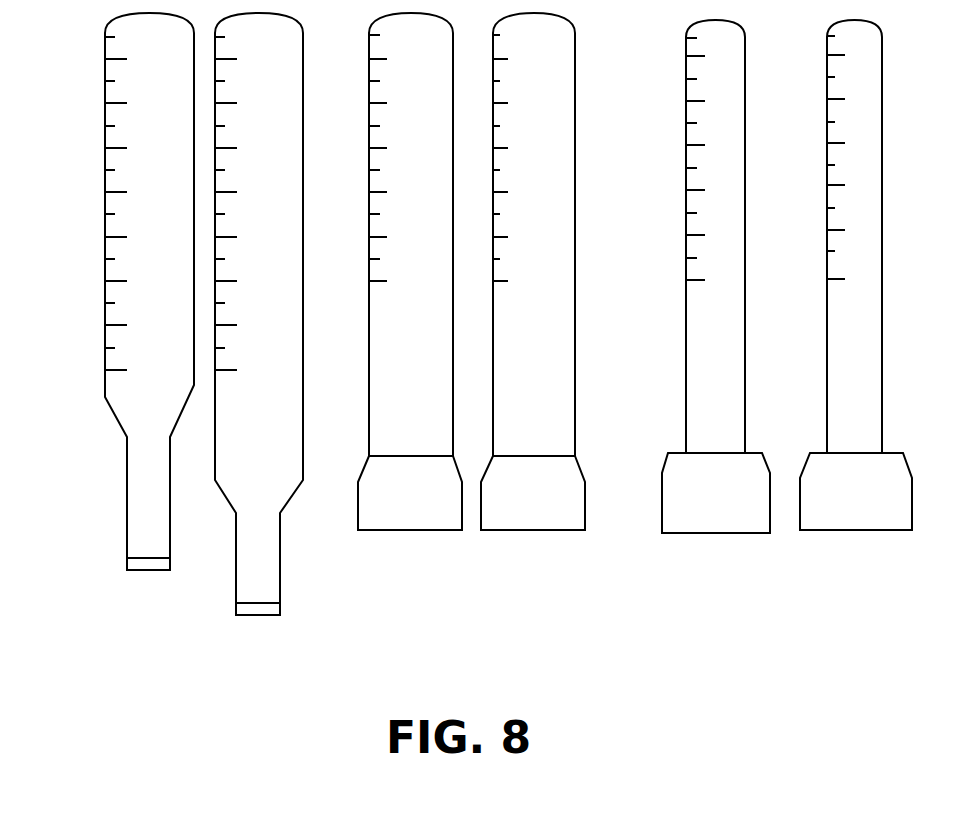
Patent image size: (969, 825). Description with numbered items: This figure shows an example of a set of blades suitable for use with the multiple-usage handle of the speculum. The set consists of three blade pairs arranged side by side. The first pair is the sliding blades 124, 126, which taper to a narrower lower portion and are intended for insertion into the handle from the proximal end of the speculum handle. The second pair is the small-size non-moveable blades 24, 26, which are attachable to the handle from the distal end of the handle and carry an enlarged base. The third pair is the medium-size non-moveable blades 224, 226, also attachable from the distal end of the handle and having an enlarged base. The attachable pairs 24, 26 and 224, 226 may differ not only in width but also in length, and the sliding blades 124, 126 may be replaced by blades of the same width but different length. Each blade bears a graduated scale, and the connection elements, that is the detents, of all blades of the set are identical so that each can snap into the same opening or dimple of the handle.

The sliding blade 124 is at (80, 303).
The sliding blade 126 is at (208, 599).
The medium-size non-moveable blade 224 is at (394, 557).
The medium-size non-moveable blade 226 is at (540, 559).
The small-size non-moveable blade 24 is at (693, 560).
The small-size non-moveable blade 26 is at (851, 561).